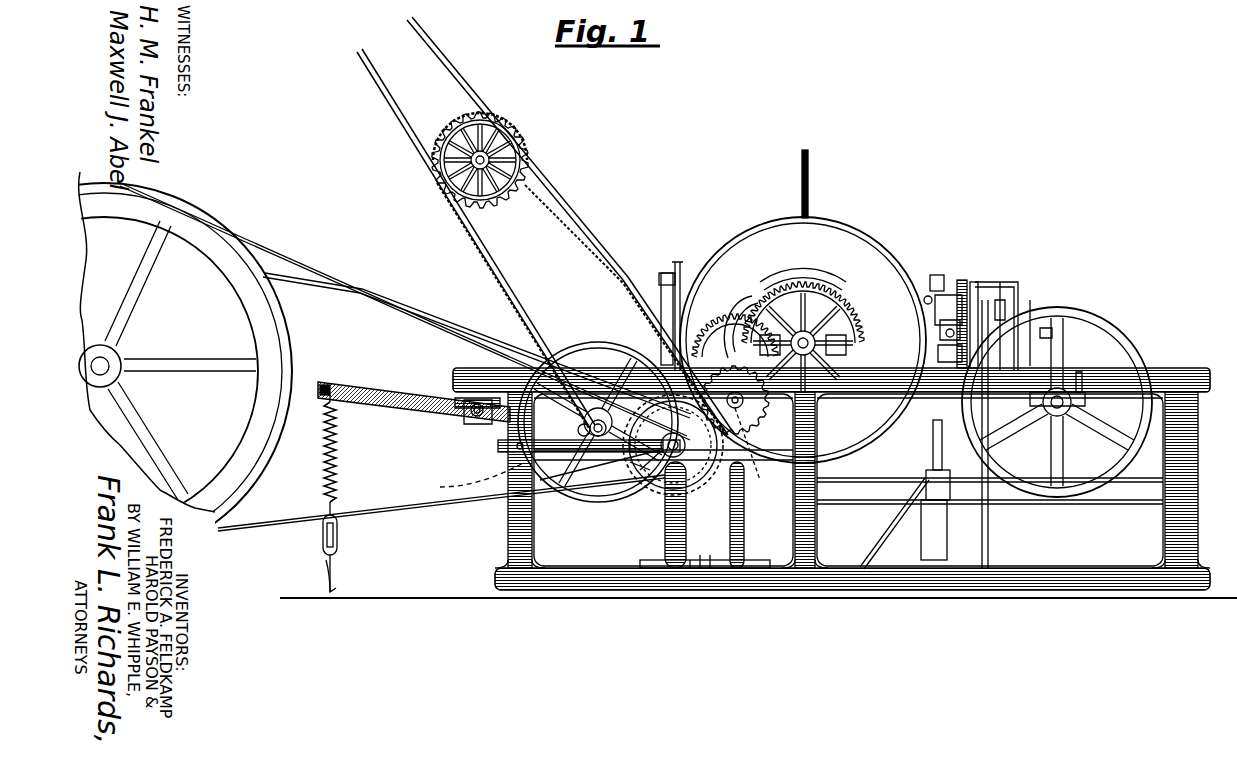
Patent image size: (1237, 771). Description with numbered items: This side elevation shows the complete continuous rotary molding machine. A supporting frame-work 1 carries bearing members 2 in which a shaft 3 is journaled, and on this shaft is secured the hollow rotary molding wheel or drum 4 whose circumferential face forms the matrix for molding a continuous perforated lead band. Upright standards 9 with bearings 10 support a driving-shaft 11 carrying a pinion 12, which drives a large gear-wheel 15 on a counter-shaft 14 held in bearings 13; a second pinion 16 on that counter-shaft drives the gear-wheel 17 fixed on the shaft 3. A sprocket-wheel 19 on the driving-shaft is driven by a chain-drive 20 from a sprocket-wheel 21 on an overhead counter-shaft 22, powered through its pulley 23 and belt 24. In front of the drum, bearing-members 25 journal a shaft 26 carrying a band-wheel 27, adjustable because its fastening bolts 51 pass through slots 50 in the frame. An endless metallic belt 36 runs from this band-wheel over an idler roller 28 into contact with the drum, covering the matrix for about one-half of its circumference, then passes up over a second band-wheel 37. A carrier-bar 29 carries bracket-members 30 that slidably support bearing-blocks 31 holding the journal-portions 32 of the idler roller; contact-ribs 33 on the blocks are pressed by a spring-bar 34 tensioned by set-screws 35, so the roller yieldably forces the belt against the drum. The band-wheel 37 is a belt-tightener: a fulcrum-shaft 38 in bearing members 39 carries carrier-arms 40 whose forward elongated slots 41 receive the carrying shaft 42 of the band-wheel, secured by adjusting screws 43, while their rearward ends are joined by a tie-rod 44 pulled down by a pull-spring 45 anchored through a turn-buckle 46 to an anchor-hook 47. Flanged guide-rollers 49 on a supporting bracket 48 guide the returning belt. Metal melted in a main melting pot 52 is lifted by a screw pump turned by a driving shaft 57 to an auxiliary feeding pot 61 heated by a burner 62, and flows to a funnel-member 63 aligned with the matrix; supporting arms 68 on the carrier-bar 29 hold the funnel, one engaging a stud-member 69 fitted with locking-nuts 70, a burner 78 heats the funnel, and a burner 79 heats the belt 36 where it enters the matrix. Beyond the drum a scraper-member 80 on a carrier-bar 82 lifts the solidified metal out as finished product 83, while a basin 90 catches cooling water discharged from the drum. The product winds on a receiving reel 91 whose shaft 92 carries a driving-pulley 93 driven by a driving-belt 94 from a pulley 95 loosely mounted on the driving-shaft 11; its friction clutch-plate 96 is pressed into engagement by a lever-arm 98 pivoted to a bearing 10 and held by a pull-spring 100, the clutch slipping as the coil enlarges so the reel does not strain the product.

The supporting frame-work 1 is at (478, 376).
The bearing members 2 is at (822, 355).
The shaft 3 is at (803, 337).
The rotary molding wheel or drum 4 is at (850, 250).
The upright standards 9 is at (670, 520).
The bearings 10 is at (628, 500).
The driving-shaft 11 is at (648, 488).
The pinion 12 is at (592, 502).
The bearings 13 is at (748, 432).
The counter-shaft 14 is at (741, 400).
The gear-wheel 15 is at (712, 354).
The second pinion 16 is at (728, 334).
The gear-wheel 17 is at (772, 292).
The sprocket-wheel 19 is at (648, 380).
The chain-drive 20 is at (610, 244).
The sprocket-wheel 21 is at (500, 202).
The overhead counter-shaft 22 is at (505, 150).
The pulley 23 is at (446, 124).
The belt 24 is at (398, 118).
The bearing-members 25 is at (1086, 404).
The shaft 26 is at (1064, 392).
The band-wheel 27 is at (1090, 332).
The idler roller 28 is at (990, 302).
The carrier-bar 29 is at (1050, 362).
The bracket-members 30 is at (938, 354).
The bearing-blocks 31 is at (946, 334).
The journal-portions 32 is at (940, 322).
The contact-ribs or projections 33 is at (1004, 320).
The spring-bar 34 is at (1036, 336).
The set-screws 35 is at (1032, 353).
The endless metallic belt 36 is at (560, 350).
The second band-wheel 37 is at (585, 342).
The fulcrum-shaft 38 is at (476, 424).
The bearing members 39 is at (470, 414).
The carrier-arms 40 is at (440, 398).
The elongated slots 41 is at (590, 436).
The carrying shaft 42 is at (584, 437).
The adjusting screws 43 is at (673, 445).
The tie-rod 44 is at (336, 385).
The pull-spring 45 is at (338, 458).
The turn-buckle 46 is at (338, 532).
The anchor-hook 47 is at (336, 584).
The supporting bracket 48 is at (940, 524).
The flanged guide-rollers 49 is at (918, 502).
The slots 50 is at (1150, 354).
The fastening bolts 51 is at (1082, 380).
The main melting pot or reservoir 52 is at (720, 572).
The driving shaft 57 is at (810, 180).
The auxiliary feeding pot or reservoir 61 is at (958, 280).
The burner 62 is at (938, 441).
The funnel-member 63 is at (940, 275).
The bracket or supporting arms 68 is at (966, 282).
The stud-member 69 is at (924, 300).
The locking-nuts 70 is at (922, 292).
The burner 78 is at (968, 286).
The burner 79 is at (872, 406).
The scraper-member 80 is at (679, 275).
The carrier-bar 82 is at (664, 292).
The finished product 83 is at (470, 318).
The basin 90 is at (838, 525).
The receiving reel 91 is at (284, 355).
The shaft 92 is at (108, 362).
The driving-pulley 93 is at (228, 268).
The driving-belt 94 is at (330, 268).
The pulley 95 is at (745, 500).
The friction clutch-plate 96 is at (696, 576).
The lever-arm 98 is at (508, 452).
The pull-spring 100 is at (466, 480).